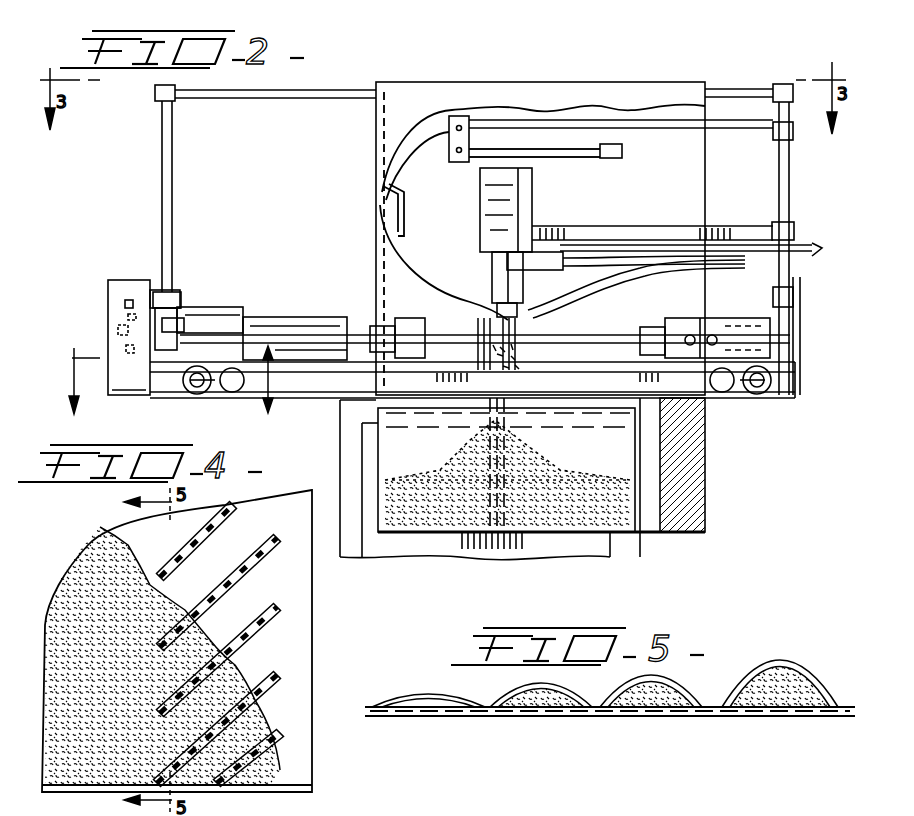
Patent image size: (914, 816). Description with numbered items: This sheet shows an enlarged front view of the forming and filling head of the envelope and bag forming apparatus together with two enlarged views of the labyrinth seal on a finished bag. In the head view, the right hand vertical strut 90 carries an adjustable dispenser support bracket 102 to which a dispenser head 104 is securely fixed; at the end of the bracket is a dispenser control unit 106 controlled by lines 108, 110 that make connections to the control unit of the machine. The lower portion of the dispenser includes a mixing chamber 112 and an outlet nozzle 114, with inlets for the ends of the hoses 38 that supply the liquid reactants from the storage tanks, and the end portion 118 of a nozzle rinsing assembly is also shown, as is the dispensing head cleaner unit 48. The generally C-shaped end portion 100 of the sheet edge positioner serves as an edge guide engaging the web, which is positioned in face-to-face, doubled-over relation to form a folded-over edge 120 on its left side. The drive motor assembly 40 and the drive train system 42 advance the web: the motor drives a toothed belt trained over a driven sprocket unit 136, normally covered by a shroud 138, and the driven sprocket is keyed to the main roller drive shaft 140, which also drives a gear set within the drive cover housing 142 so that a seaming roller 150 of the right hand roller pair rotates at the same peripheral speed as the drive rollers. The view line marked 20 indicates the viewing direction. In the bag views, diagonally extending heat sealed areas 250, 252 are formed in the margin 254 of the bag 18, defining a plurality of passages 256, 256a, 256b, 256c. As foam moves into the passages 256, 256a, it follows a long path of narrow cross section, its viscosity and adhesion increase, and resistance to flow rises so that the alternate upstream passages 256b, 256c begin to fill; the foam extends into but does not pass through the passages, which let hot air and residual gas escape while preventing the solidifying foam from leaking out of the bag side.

In FIG. 4, the bag 18 is at (320, 750).
In FIG. 2, the viewing direction line 20 is at (161, 388).
In FIG. 2, the hoses 38 is at (808, 253).
In FIG. 2, the drive motor assembly 40 is at (250, 298).
In FIG. 2, the drive train system 42 is at (102, 324).
In FIG. 2, the dispensing head cleaner unit 48 is at (528, 282).
In FIG. 2, the right hand vertical strut 90 is at (790, 180).
In FIG. 2, the end portion 100 is at (382, 190).
In FIG. 2, the adjustable dispenser support bracket 102 is at (752, 224).
In FIG. 2, the dispenser head 104 is at (486, 238).
In FIG. 2, the dispenser control unit 106 is at (480, 182).
In FIG. 2, the line 108 is at (566, 200).
In FIG. 2, the line 110 is at (566, 184).
In FIG. 2, the mixing chamber 112 is at (497, 288).
In FIG. 2, the outlet nozzle 114 is at (490, 318).
In FIG. 2, the end portion of nozzle rinsing assembly 118 is at (500, 308).
In FIG. 2, the folded-over edge 120 is at (380, 284).
In FIG. 2, the driven sprocket unit 136 is at (130, 312).
In FIG. 2, the shroud 138 is at (138, 288).
In FIG. 2, the main roller drive shaft 140 is at (333, 337).
In FIG. 2, the drive cover housing 142 is at (183, 305).
In FIG. 2, the seaming roller 150 is at (720, 314).
In FIG. 4, the heat sealed area 250 is at (270, 678).
In FIG. 4, the heat sealed area 252 is at (267, 622).
In FIG. 4, the margin 254 is at (294, 580).
In FIG. 4, the passage 256 is at (260, 720).
In FIG. 5, the passage 256 is at (427, 722).
In FIG. 4, the passage 256a is at (180, 727).
In FIG. 5, the passage 256a is at (560, 712).
In FIG. 4, the passage 256b is at (180, 660).
In FIG. 5, the passage 256b is at (672, 717).
In FIG. 4, the passage 256c is at (210, 560).
In FIG. 5, the passage 256c is at (785, 713).